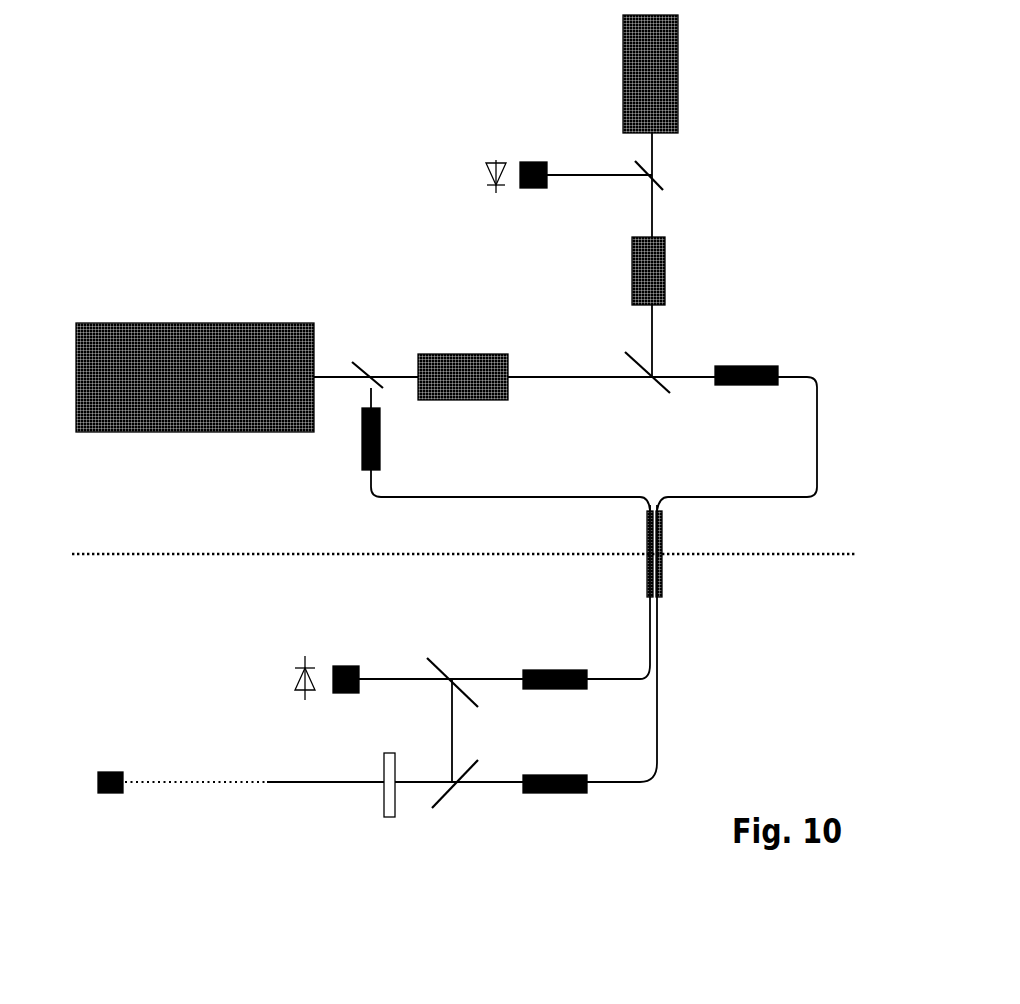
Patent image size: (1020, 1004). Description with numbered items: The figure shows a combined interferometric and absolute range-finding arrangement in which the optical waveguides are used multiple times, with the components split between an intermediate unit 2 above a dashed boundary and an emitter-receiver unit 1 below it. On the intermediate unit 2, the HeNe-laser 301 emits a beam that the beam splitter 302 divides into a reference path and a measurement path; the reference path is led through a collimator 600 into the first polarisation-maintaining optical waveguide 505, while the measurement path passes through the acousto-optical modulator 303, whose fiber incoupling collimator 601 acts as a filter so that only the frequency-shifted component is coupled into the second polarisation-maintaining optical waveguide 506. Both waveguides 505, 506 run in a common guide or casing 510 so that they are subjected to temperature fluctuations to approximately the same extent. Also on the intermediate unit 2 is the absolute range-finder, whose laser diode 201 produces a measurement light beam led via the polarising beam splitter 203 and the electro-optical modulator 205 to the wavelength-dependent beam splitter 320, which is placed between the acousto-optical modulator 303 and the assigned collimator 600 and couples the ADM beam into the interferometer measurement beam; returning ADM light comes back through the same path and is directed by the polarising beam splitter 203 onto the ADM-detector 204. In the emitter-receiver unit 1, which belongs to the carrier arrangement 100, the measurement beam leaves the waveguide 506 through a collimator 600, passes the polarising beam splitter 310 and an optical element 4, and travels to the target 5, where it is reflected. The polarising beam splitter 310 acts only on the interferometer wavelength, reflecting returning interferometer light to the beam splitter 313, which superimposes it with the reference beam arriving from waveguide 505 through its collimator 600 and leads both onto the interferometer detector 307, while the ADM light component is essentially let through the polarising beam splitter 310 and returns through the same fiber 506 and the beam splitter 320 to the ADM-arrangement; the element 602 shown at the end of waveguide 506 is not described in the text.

The emitter-receiver unit 1 is at (92, 636).
The intermediate unit 2 is at (91, 534).
The polarizer / optical element 4 is at (388, 818).
The target 5 is at (98, 782).
The carrier arrangement 100 is at (232, 642).
The laser diode 201 is at (678, 57).
The polarising beam splitter 203 is at (658, 172).
The ADM-detector 204 is at (536, 160).
The electro-optical modulator 205 is at (655, 255).
The HeNe-laser 301 is at (176, 432).
The beam splitter 302 is at (370, 362).
The acousto-optical modulator 303 is at (458, 352).
The interferometer detector 307 is at (349, 664).
The polarising beam splitter 310 is at (455, 795).
The beam splitter 313 is at (453, 670).
The wavelength-dependent beam splitter 320 is at (659, 369).
The first polarisation-maintaining optical waveguide 505 is at (644, 672).
The second polarisation-maintaining optical waveguide 506 is at (660, 746).
The common guide or casing 510 is at (663, 575).
The collimator 600 is at (381, 440).
The collimator 601 is at (777, 365).
The fiber coupler 602 is at (557, 794).